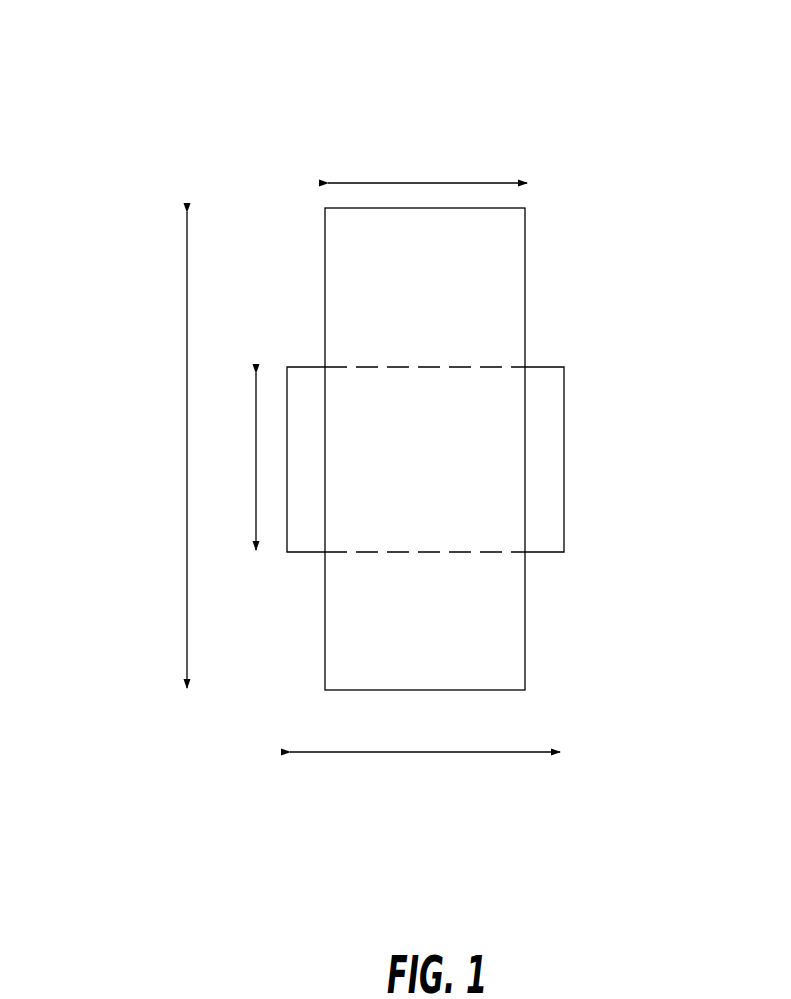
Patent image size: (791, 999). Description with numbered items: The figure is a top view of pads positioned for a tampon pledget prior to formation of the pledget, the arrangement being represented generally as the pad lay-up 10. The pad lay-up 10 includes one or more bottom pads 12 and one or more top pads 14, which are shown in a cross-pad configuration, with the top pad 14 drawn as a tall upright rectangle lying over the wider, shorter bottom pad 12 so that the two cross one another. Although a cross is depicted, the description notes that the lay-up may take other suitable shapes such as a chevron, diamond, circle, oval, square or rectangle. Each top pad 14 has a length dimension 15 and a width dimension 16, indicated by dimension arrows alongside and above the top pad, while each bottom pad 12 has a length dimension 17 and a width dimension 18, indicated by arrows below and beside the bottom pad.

The pad lay-up 10 is at (553, 160).
The bottom pad 12 is at (549, 474).
The top pad 14 is at (505, 282).
The length dimension 15 is at (186, 453).
The width dimension 16 is at (422, 182).
The length dimension 17 is at (423, 752).
The width dimension 18 is at (256, 458).